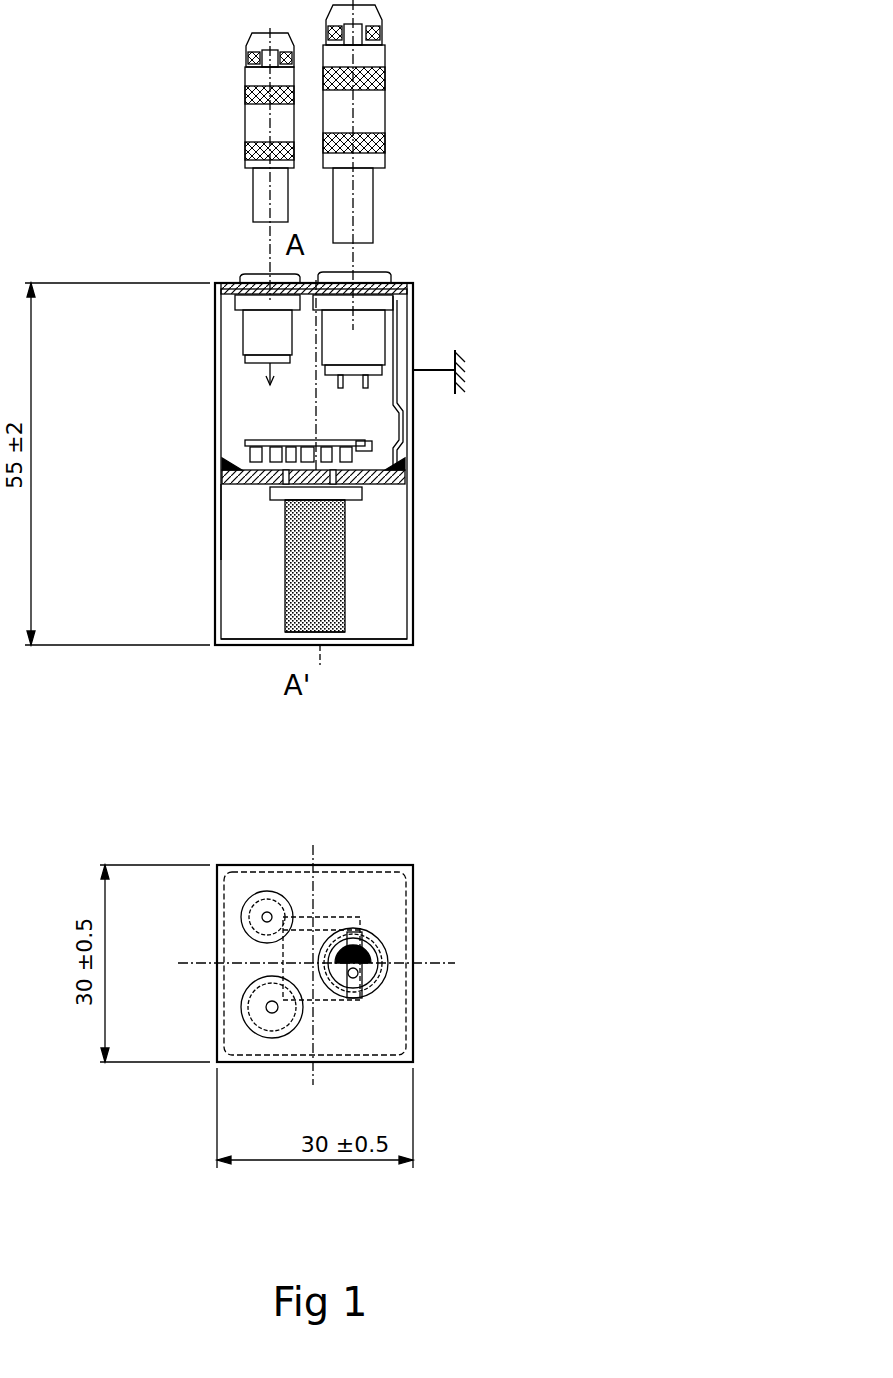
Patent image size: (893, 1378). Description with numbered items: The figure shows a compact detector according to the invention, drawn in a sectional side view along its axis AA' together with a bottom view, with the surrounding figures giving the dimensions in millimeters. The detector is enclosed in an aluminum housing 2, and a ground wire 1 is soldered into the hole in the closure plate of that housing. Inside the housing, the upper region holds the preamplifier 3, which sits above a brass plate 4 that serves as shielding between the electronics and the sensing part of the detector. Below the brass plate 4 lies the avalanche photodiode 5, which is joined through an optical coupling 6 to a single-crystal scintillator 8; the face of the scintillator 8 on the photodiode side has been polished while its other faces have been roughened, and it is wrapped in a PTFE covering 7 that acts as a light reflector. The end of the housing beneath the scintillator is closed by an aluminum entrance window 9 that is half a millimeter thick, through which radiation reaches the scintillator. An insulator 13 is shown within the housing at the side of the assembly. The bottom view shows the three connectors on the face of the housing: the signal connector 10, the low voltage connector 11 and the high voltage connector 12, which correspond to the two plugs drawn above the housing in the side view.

The ground wire 1 is at (413, 318).
The aluminum housing 2 is at (420, 343).
The preamplifier 3 is at (372, 436).
The brass plate 4 is at (408, 470).
The avalanche photodiode 5 is at (366, 495).
The optical coupling 6 is at (347, 506).
The PTFE covering 7 is at (347, 568).
The single-crystal scintillator 8 is at (347, 600).
The aluminum entrance window 9 is at (402, 648).
The signal connector 10 is at (292, 900).
The low voltage connector 11 is at (400, 960).
The high voltage connector 12 is at (305, 1025).
The insulator 13 is at (375, 435).